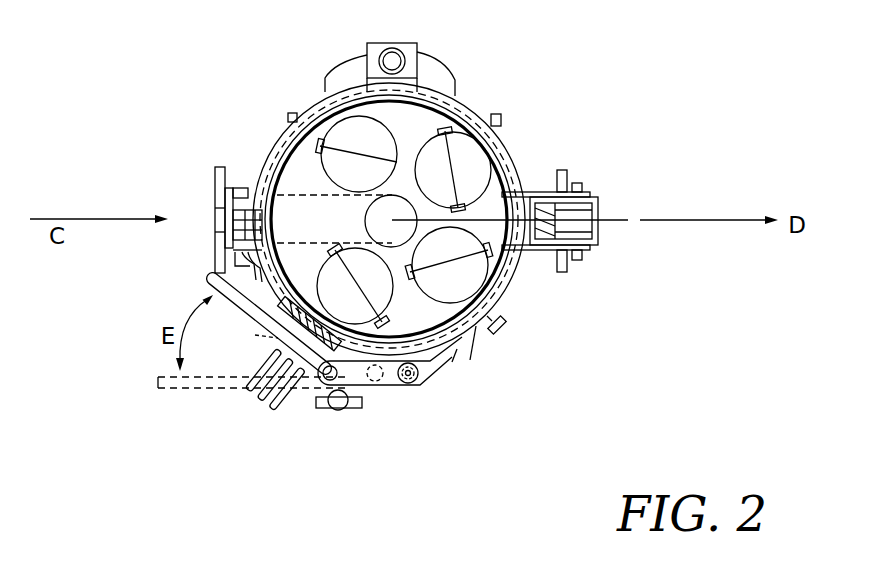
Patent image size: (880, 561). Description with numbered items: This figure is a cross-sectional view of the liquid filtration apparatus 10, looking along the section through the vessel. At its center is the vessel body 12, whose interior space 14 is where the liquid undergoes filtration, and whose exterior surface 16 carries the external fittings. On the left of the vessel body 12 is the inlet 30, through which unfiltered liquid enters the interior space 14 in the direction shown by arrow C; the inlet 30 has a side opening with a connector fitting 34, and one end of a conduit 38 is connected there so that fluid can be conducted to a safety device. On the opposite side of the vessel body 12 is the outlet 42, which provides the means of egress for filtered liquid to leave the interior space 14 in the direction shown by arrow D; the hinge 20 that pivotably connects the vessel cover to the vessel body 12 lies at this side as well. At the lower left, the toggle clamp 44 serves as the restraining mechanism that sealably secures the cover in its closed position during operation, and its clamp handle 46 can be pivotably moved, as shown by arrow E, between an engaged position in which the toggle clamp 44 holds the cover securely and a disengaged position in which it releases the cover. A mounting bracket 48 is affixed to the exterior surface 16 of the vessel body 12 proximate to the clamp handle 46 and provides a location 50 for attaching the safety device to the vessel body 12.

The liquid filtration apparatus 10 is at (578, 108).
The vessel body 12 is at (478, 103).
The interior space 14 is at (423, 115).
The exterior surface 16 is at (322, 102).
The hinge 20 is at (573, 210).
The inlet 30 is at (234, 171).
The connector fitting 34 is at (218, 248).
The conduit 38 is at (218, 261).
The outlet 42 is at (568, 177).
The toggle clamp 44 is at (363, 387).
The clamp handle 46 is at (214, 283).
The mounting bracket 48 is at (268, 307).
The location 50 is at (237, 322).